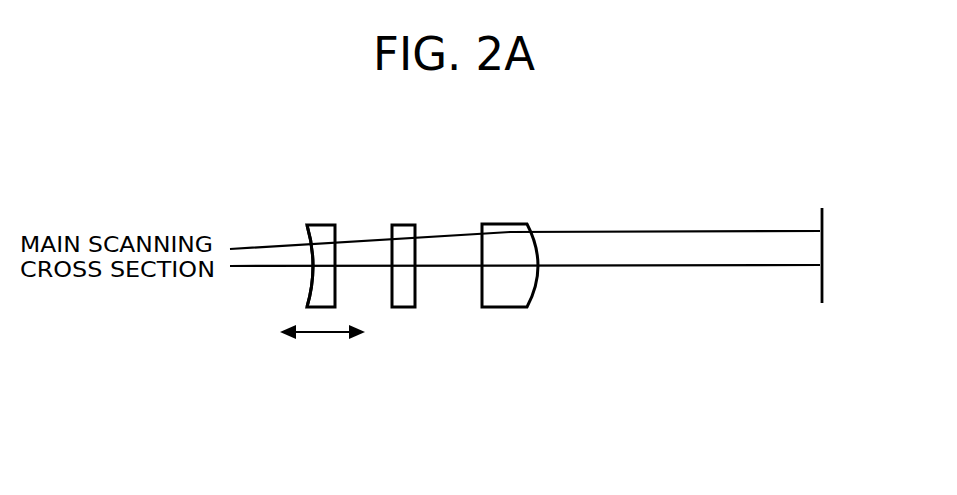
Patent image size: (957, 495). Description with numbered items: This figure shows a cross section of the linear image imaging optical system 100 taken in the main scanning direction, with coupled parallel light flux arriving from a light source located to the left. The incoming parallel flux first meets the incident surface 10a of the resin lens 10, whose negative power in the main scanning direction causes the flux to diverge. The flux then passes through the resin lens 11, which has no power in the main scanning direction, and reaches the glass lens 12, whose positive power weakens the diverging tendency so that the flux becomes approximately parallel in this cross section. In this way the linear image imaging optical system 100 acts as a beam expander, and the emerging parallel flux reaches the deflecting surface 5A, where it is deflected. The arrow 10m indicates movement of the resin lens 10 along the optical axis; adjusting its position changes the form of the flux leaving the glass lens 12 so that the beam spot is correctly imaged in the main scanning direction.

The linear image imaging optical system 100 is at (522, 160).
The resin lens 10 is at (321, 225).
The resin lens 11 is at (397, 225).
The glass lens 12 is at (507, 224).
The deflecting surface 5A is at (824, 285).
The incident surface 10a is at (308, 294).
The arrow 10m is at (322, 334).